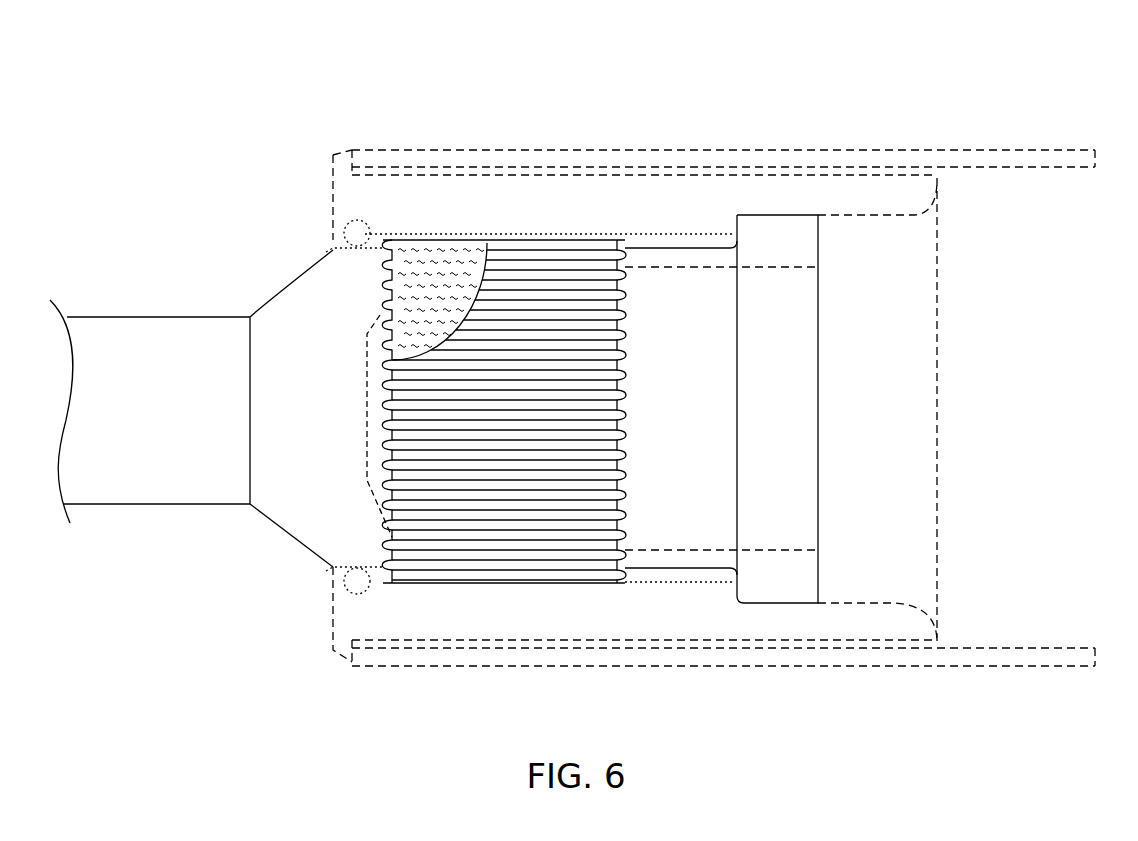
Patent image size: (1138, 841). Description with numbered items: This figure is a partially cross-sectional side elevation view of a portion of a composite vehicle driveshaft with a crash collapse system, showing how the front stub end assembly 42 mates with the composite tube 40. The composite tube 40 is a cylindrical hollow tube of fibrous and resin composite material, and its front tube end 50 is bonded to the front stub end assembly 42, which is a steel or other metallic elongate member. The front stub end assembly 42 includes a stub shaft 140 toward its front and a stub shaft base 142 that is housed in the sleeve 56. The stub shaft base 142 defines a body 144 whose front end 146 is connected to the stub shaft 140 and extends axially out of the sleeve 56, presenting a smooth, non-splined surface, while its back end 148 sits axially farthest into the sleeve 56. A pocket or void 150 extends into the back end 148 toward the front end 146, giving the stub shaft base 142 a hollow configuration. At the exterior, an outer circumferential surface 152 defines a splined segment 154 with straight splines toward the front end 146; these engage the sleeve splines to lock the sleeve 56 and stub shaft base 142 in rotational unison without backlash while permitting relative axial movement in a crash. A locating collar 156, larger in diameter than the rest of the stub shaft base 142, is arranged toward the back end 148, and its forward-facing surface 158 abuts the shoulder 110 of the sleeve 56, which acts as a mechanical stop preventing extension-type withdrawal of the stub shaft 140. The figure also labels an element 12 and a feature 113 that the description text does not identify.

The fitting assembly 12 is at (155, 118).
The composite tube 40 is at (996, 100).
The front stub end assembly 42 is at (147, 563).
The front tube end 50 is at (652, 110).
The sleeve 56 is at (626, 625).
The shoulder 110 is at (738, 252).
The textured surface 113 is at (404, 248).
The stub shaft 140 is at (155, 262).
The stub shaft base 142 is at (233, 234).
The body 144 is at (512, 612).
The front end 146 is at (268, 552).
The back end 148 is at (902, 580).
The pocket or void 150 is at (700, 485).
The outer circumferential surface 152 is at (329, 270).
The splined segment 154 is at (527, 262).
The collar 156 is at (798, 409).
The forward-facing surface 158 is at (727, 222).